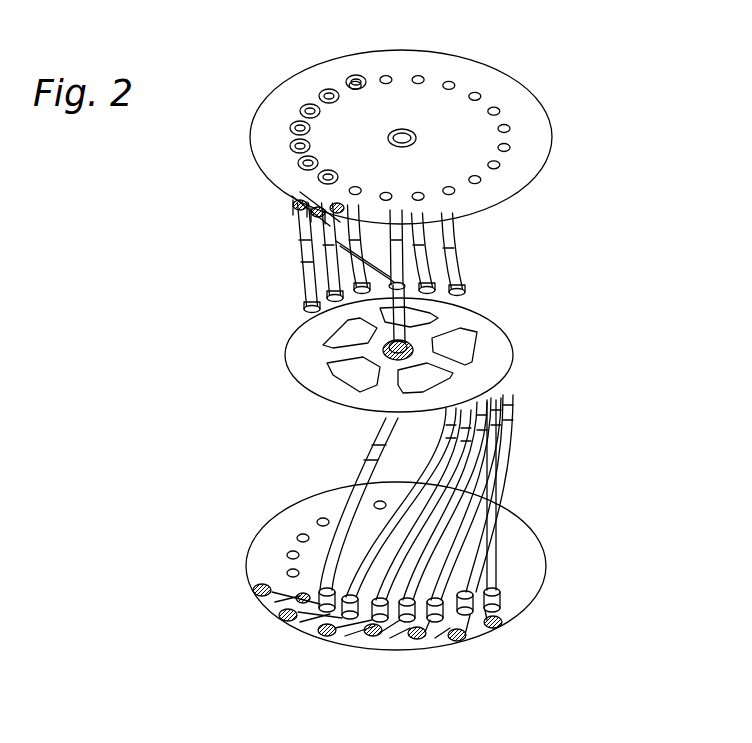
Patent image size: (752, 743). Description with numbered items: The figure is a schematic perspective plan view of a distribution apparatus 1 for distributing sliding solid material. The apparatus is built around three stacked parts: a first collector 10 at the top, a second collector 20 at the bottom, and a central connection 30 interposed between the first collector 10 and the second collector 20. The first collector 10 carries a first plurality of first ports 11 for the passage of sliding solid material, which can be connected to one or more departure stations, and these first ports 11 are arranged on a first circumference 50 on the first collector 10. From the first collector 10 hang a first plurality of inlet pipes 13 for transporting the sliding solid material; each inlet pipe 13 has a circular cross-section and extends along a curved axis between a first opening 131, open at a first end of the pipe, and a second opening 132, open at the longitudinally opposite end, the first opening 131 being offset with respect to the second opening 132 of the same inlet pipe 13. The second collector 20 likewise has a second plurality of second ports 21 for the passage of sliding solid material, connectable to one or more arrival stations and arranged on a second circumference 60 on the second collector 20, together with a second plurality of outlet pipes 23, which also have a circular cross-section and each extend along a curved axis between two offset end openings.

The distribution apparatus 1 is at (321, 355).
The first collector 10 is at (436, 137).
The first ports 11 is at (483, 146).
The inlet pipes 13 is at (449, 254).
The first opening 131 is at (258, 188).
The second opening 132 is at (326, 328).
The second collector 20 is at (461, 566).
The second ports 21 is at (284, 532).
The outlet pipes 23 is at (462, 497).
The central connection 30 is at (445, 348).
The first circumference 50 is at (295, 98).
The second circumference 60 is at (439, 611).